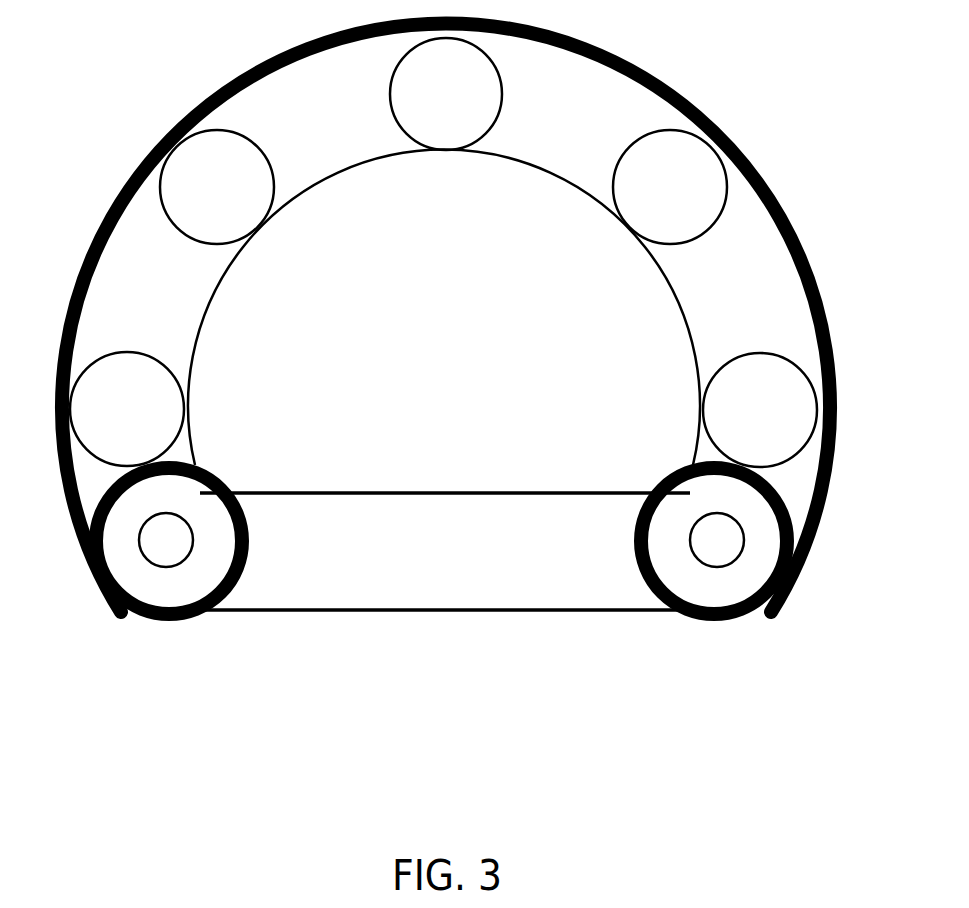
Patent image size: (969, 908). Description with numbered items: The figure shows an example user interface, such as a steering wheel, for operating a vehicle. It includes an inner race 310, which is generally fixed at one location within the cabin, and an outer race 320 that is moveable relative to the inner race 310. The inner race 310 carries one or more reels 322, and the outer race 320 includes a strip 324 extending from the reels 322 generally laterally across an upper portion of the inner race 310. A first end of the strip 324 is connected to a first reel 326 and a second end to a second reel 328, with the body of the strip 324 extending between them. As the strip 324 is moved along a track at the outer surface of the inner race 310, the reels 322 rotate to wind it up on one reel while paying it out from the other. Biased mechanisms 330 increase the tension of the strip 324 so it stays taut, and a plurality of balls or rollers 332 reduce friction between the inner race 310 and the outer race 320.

The outer race 320 is at (463, 350).
The strip 324 is at (787, 222).
The inner race 310 is at (692, 337).
The rollers 332 is at (423, 147).
The first reel 326 is at (212, 548).
The second reel 328 is at (670, 540).
The biased mechanisms 330 is at (185, 521).
The reels 322 is at (136, 632).